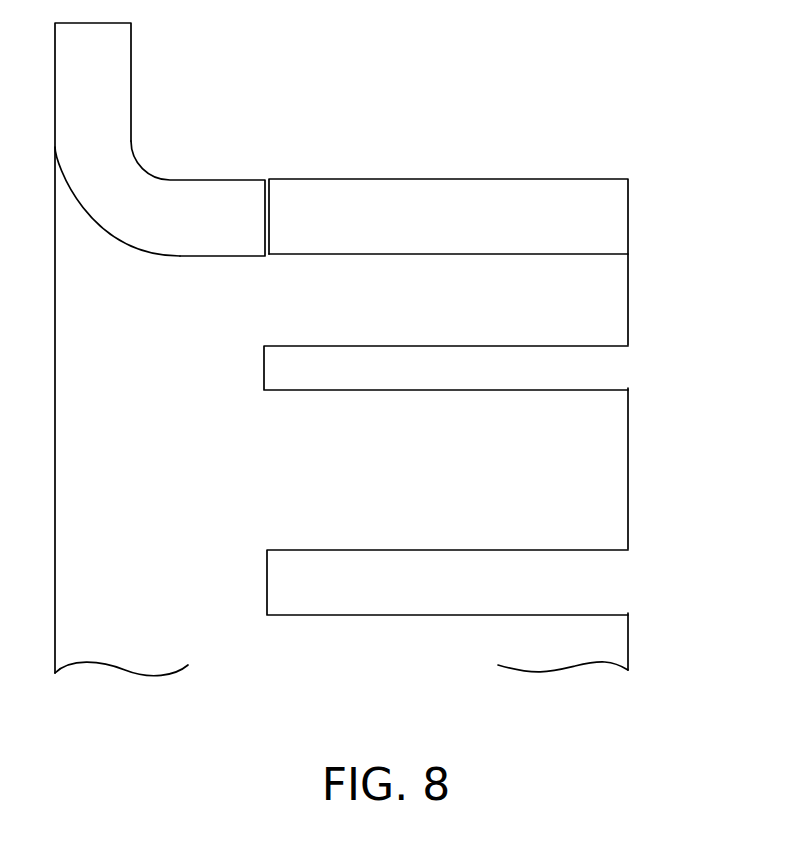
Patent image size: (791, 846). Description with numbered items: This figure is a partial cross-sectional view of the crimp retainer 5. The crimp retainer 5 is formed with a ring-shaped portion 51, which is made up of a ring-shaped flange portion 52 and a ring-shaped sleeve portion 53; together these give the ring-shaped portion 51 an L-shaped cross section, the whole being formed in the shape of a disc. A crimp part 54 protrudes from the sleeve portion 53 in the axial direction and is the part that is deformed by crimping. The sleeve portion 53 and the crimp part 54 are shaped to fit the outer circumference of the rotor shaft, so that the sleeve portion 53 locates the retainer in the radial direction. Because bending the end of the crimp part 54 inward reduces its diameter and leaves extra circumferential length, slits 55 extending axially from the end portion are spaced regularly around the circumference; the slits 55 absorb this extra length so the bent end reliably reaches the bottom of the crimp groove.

The crimp retainer 5 is at (345, 72).
The ring-shaped portion 51 is at (260, 52).
The ring-shaped flange portion 52 is at (108, 80).
The ring-shaped sleeve portion 53 is at (210, 197).
The crimp part 54 is at (547, 197).
The slits 55 is at (592, 367).